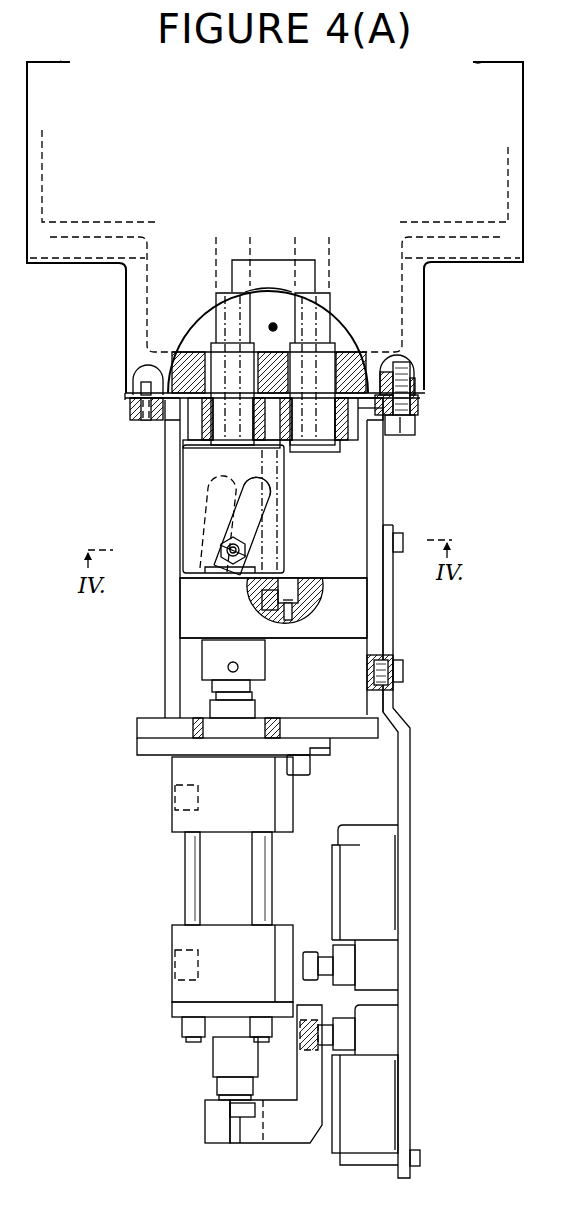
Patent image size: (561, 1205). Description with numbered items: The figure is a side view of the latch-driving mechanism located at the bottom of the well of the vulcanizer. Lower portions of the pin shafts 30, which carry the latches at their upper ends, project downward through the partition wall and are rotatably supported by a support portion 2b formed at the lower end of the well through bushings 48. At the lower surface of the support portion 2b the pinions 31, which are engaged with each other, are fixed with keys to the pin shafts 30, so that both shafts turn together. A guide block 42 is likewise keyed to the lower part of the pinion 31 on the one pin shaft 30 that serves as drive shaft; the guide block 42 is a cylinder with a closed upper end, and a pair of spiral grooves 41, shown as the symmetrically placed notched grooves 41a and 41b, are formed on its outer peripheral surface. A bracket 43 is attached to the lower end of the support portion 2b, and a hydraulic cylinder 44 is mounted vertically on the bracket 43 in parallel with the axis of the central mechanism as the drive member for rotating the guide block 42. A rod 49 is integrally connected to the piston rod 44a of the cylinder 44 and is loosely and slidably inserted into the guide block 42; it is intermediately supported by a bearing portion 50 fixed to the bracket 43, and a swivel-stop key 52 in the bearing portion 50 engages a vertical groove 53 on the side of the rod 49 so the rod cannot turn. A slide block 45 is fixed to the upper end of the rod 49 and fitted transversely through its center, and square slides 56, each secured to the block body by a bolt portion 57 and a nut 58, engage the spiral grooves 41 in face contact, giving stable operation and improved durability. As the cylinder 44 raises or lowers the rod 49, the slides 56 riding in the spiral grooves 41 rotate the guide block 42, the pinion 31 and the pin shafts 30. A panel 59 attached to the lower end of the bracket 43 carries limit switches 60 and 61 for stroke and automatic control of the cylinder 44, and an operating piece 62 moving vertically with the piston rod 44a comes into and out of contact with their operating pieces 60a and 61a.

The support portion 2b is at (423, 322).
The pin shafts 30 is at (228, 320).
The bushings 48 is at (205, 371).
The pinions 31 is at (170, 404).
The guide block 42 is at (207, 463).
The spiral groove 41 is at (222, 518).
The spiral groove 41a is at (267, 502).
The spiral groove 41b is at (198, 492).
The slide block 45 is at (258, 544).
The slides 56 is at (230, 545).
The bolt portion 57 is at (230, 553).
The nut 58 is at (222, 570).
The swivel-stop key 52 is at (250, 600).
The groove 53 is at (258, 606).
The bearing portion 50 is at (333, 622).
The bracket 43 is at (378, 650).
The rod 49 is at (254, 664).
The piston rod 44a is at (234, 712).
The hydraulic cylinder 44 is at (215, 882).
The panel 59 is at (405, 898).
The limit switch 60 is at (372, 868).
The operating piece 60a is at (318, 963).
The limit switch 61 is at (380, 1102).
The operating piece 61a is at (333, 1030).
The operating piece 62 is at (293, 1118).